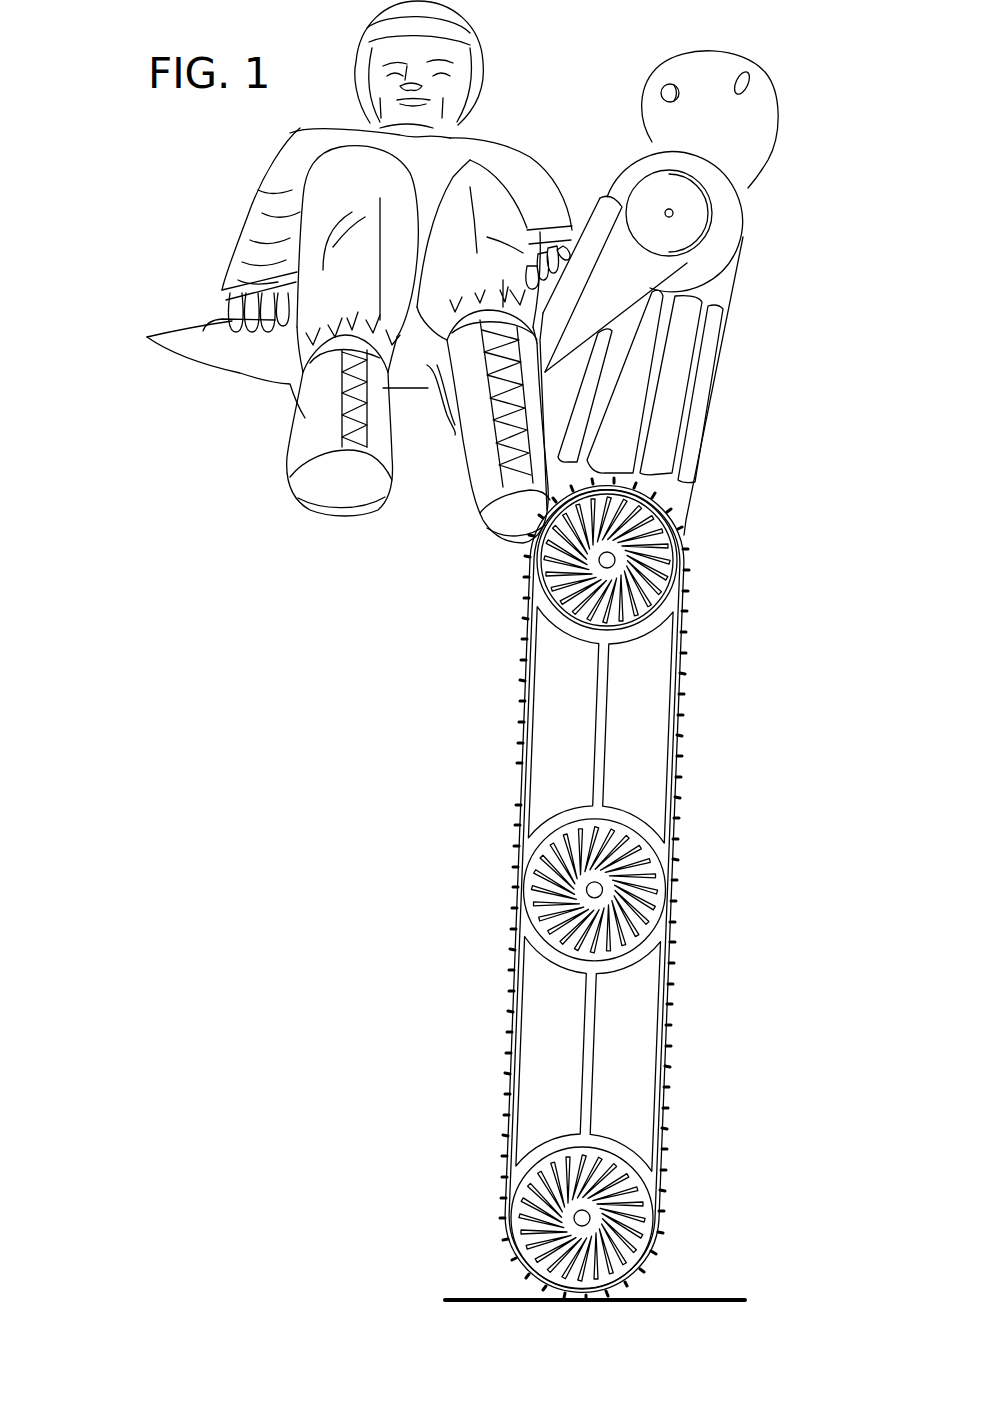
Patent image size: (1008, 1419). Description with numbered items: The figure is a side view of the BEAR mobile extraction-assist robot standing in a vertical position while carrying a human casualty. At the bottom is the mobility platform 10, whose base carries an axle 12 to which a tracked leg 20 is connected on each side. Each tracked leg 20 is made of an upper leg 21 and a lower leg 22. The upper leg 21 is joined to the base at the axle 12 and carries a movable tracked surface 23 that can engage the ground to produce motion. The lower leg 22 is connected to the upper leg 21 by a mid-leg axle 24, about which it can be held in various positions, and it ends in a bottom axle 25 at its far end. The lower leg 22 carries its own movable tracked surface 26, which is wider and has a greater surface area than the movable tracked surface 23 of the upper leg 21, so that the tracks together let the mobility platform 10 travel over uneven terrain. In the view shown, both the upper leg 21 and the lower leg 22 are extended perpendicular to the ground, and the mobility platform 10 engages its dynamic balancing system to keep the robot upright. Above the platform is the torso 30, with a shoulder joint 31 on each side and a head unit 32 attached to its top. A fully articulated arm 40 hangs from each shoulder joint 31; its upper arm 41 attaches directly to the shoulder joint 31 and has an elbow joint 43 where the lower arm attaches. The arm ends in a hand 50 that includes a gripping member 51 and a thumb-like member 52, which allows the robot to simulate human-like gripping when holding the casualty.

The mobility platform 10 is at (619, 675).
The axle 12 is at (668, 590).
The tracked leg 20 is at (575, 889).
The upper leg 21 is at (638, 722).
The lower leg 22 is at (635, 1005).
The movable tracked surface 23 is at (527, 662).
The mid-leg axle 24 is at (672, 878).
The bottom axle 25 is at (660, 1216).
The movable tracked surface 26 is at (513, 1054).
The torso 30 is at (690, 400).
The shoulder joint 31 is at (687, 215).
The head unit 32 is at (770, 111).
The articulated arm 40 is at (573, 187).
The upper arm 41 is at (623, 290).
The elbow joint 43 is at (542, 365).
The hand 50 is at (177, 330).
The gripping member 51 is at (240, 363).
The thumb-like member 52 is at (225, 325).